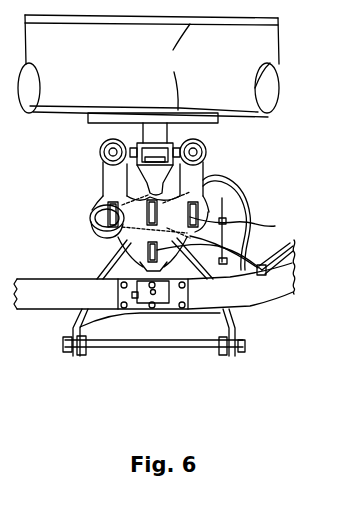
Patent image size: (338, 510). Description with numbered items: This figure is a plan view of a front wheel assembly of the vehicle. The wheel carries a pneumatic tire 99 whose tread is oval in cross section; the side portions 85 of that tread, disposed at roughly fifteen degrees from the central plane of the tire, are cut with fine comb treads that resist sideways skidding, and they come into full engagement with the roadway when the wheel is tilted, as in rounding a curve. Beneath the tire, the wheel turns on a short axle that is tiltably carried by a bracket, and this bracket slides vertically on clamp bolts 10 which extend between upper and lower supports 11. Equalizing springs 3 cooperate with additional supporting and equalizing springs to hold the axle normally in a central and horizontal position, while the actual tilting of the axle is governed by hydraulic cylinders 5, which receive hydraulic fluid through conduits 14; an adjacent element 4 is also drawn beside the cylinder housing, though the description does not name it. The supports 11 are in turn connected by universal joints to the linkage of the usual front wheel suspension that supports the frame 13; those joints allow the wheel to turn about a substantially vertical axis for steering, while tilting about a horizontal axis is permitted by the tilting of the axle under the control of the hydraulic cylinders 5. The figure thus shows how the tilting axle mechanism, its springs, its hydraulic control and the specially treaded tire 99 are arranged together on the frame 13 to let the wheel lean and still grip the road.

The side portions of the tread 85 is at (148, 66).
The tire 99 is at (262, 48).
The clamp bolts 10 is at (100, 153).
The supports 11 is at (123, 193).
The hydraulic cylinders 5 is at (92, 217).
The ring housing 4 is at (100, 240).
The equalizing springs 3 is at (110, 258).
The frame 13 is at (154, 298).
The conduits 14 is at (232, 224).